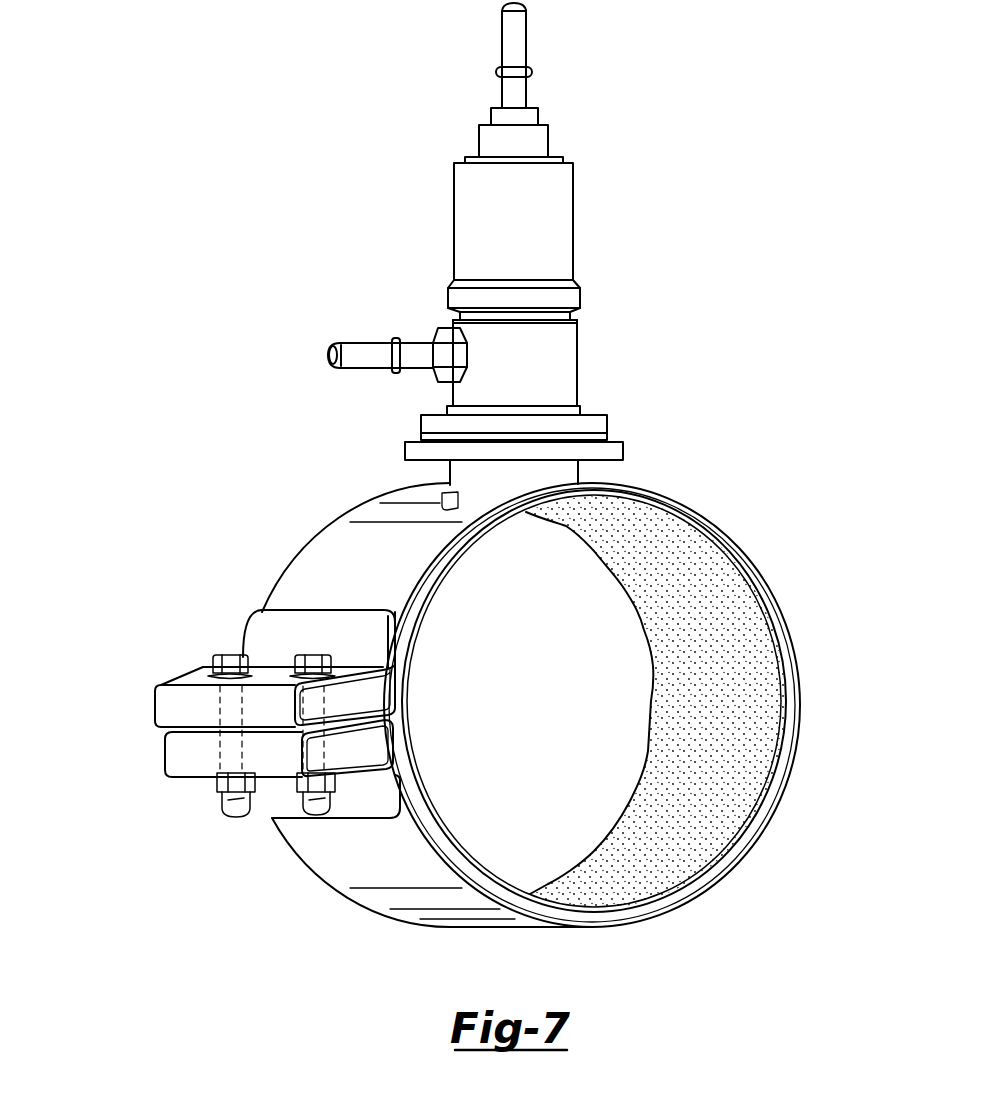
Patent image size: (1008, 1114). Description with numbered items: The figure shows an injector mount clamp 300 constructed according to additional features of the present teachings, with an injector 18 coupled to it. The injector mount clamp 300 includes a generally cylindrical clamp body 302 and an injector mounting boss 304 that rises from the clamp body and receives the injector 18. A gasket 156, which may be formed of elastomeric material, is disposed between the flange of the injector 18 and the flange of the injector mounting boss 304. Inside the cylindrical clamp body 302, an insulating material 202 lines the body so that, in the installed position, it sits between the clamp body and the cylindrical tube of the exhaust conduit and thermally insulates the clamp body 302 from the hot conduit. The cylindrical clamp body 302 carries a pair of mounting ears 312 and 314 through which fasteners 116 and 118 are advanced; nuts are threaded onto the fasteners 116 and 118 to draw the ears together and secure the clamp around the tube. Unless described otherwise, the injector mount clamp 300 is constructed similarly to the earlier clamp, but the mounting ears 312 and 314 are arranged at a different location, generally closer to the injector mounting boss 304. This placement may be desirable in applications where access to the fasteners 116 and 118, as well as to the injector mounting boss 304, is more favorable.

The injector 18 is at (592, 229).
The gasket 156 is at (597, 437).
The injector mounting boss 304 is at (618, 450).
The injector mount clamp 300 is at (750, 514).
The cylindrical clamp body 302 is at (342, 532).
The insulating material 202 is at (682, 694).
The fastener 116 is at (228, 655).
The fastener 118 is at (312, 655).
The mounting ear 312 is at (165, 717).
The mounting ear 314 is at (175, 762).